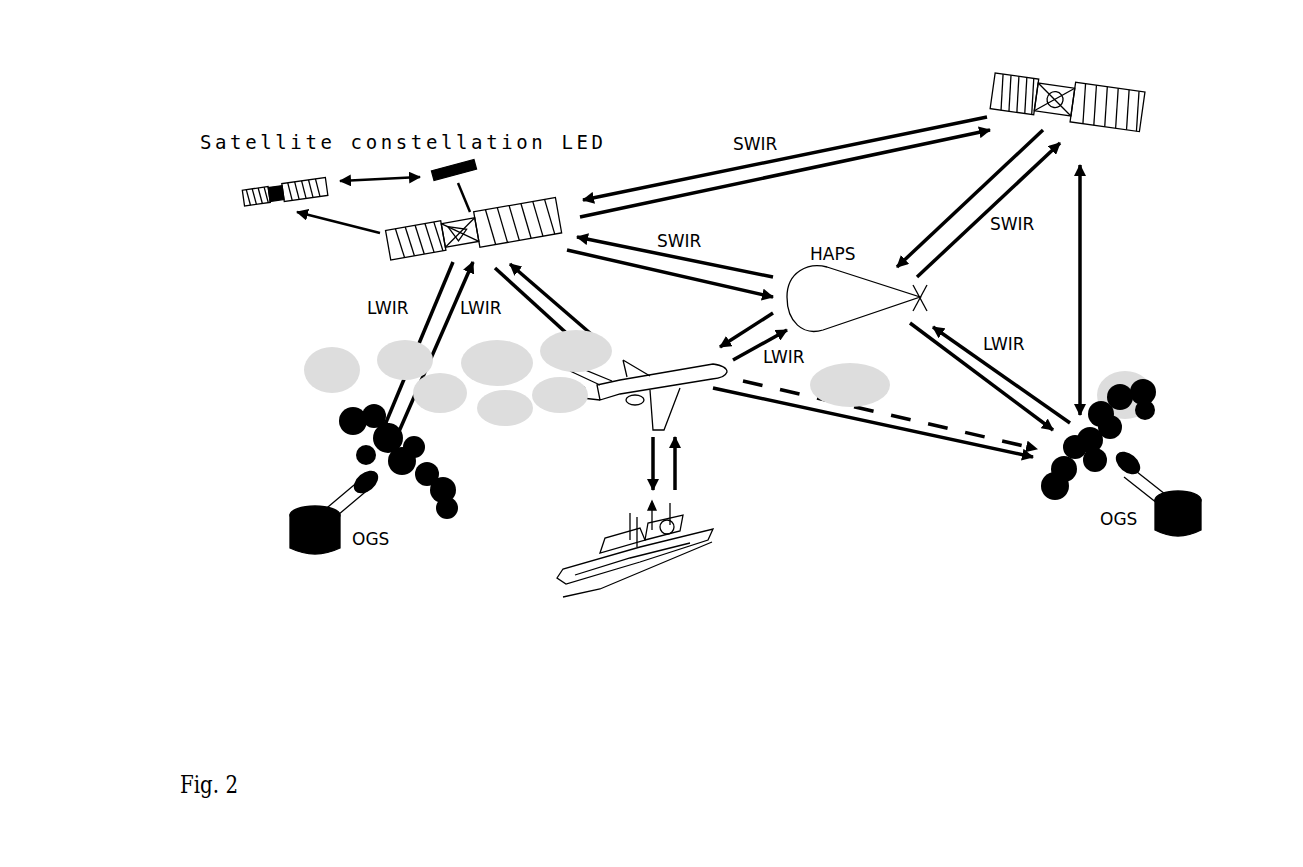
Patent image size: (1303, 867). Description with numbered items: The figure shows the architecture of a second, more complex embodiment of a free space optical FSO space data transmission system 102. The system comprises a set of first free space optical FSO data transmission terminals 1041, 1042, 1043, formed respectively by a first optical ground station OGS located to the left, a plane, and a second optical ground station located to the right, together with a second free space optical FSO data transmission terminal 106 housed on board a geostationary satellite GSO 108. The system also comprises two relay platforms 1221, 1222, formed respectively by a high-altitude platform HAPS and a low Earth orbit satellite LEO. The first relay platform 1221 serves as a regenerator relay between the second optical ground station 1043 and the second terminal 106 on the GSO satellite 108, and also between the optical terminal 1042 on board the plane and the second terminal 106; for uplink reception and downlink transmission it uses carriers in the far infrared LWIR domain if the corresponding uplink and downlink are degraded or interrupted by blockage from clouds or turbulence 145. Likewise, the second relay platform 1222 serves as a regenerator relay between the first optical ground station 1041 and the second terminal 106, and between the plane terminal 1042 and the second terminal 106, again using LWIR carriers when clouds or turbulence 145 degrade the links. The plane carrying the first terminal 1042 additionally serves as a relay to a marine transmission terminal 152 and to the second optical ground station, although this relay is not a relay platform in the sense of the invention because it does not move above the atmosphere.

The free space optical FSO space data transmission system 102 is at (592, 77).
The second free space optical FSO data transmission terminal 106 is at (1062, 80).
The geostationary satellite GSO 108 is at (993, 90).
The second relay platform 1222 is at (380, 257).
The first relay platform 1221 is at (860, 300).
The first free space optical FSO data transmission terminal 1041 is at (295, 520).
The first free space optical FSO data transmission terminal 1042 is at (680, 393).
The first free space optical FSO data transmission terminal 1043 is at (1195, 500).
The clouds or turbulence 145 is at (305, 370).
The marine transmission terminal 152 is at (713, 533).